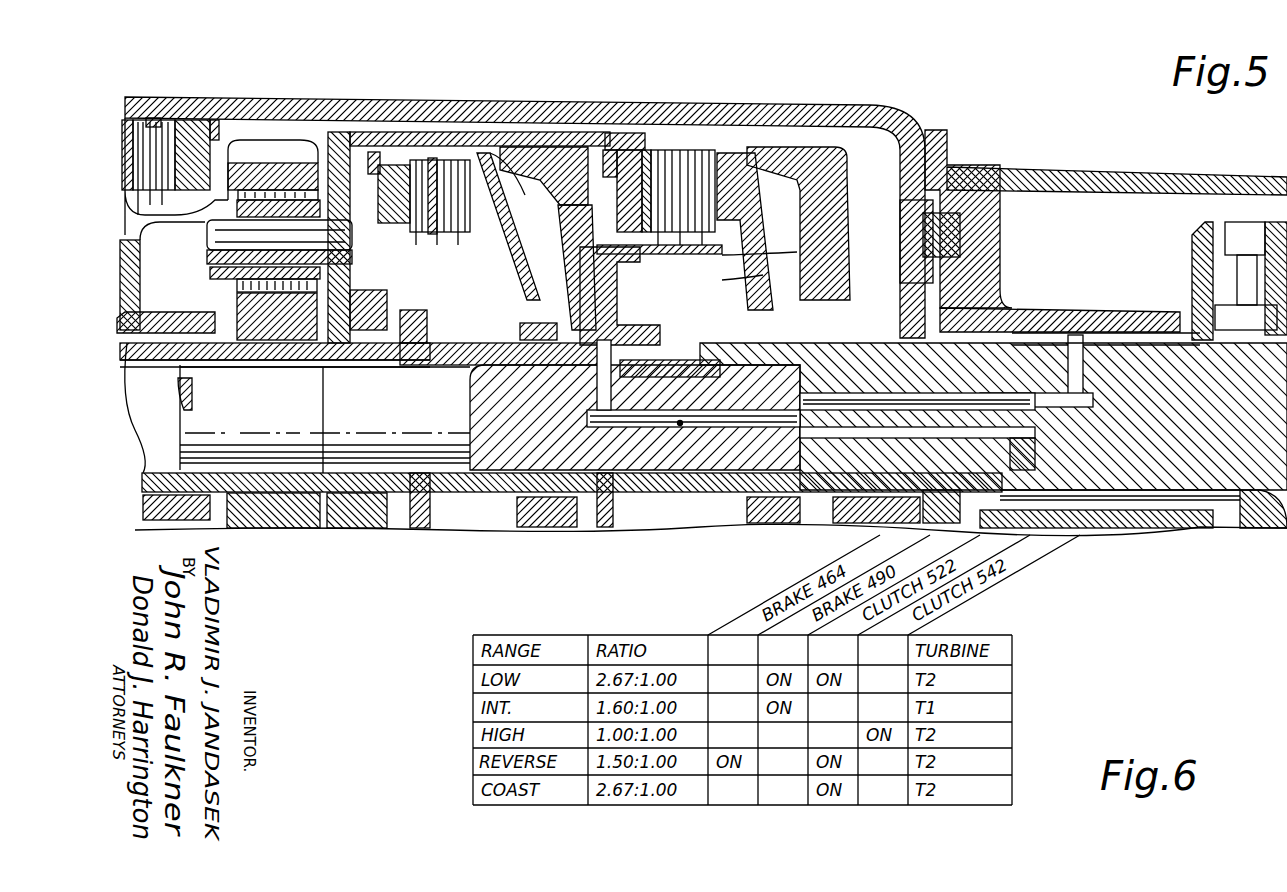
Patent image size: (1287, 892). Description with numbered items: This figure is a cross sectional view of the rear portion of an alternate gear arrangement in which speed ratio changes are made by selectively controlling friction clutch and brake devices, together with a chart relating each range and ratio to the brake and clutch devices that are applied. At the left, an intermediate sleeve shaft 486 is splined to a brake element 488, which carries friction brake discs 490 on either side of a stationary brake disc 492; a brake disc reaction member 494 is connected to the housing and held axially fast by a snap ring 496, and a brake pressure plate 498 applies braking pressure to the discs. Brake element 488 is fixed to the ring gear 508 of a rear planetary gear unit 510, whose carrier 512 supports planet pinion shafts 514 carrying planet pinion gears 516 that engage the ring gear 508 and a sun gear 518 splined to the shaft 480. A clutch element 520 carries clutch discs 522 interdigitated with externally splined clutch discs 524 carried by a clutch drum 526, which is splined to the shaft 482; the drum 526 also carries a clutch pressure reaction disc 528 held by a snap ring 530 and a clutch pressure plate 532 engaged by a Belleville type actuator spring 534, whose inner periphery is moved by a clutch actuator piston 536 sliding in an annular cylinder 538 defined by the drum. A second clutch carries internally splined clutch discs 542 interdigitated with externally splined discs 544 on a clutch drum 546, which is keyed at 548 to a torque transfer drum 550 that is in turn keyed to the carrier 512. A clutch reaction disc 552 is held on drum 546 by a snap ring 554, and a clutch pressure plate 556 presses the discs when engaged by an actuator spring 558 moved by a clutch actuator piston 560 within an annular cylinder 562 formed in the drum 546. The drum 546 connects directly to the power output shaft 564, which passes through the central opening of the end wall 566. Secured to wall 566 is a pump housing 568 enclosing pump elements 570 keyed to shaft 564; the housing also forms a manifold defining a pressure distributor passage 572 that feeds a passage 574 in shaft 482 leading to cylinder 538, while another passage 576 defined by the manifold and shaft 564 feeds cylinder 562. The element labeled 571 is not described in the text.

The shaft 480 is at (235, 345).
The shaft 482 is at (295, 450).
The intermediate sleeve shaft 486 is at (157, 320).
The brake element 488 is at (143, 248).
The friction brake discs 490 is at (165, 130).
The stationary brake disc 492 is at (150, 117).
The brake disc reaction member 494 is at (190, 120).
The snap ring 496 is at (213, 127).
The brake pressure plate 498 is at (138, 120).
The ring gear 508 is at (253, 165).
The rear planetary gear unit 510 is at (342, 147).
The carrier 512 is at (367, 287).
The planet pinion shafts 514 is at (267, 250).
The planet pinion gears 516 is at (317, 290).
The sun gear 518 is at (283, 330).
The clutch element 520 is at (497, 235).
The clutch discs 522 is at (465, 160).
The externally splined clutch discs 524 is at (430, 160).
The clutch drum 526 is at (530, 148).
The clutch pressure reaction disc 528 is at (398, 160).
The snap ring 530 is at (373, 152).
The clutch pressure plate 532 is at (557, 227).
The Belleville type actuator spring 534 is at (537, 262).
The clutch actuator piston 536 is at (527, 312).
The annular cylinder 538 is at (605, 335).
The internally splined clutch discs 542 is at (700, 152).
The externally splined discs 544 is at (663, 152).
The clutch drum 546 is at (800, 147).
The key 548 is at (632, 152).
The drum 550 is at (580, 135).
The clutch reaction disc 552 is at (612, 252).
The snap ring 554 is at (615, 152).
The clutch pressure plate 556 is at (733, 157).
The actuator spring 558 is at (763, 273).
The clutch actuator piston 560 is at (800, 253).
The annular cylinder 562 is at (777, 167).
The power output shaft 564 is at (1267, 470).
The end wall 566 is at (893, 147).
The pump housing 568 is at (1133, 317).
The pump elements 570 is at (1240, 176).
The bell wall 571 is at (1000, 306).
The pressure distributor passage 572 is at (1037, 400).
The passage 574 is at (680, 425).
The passage 576 is at (950, 445).